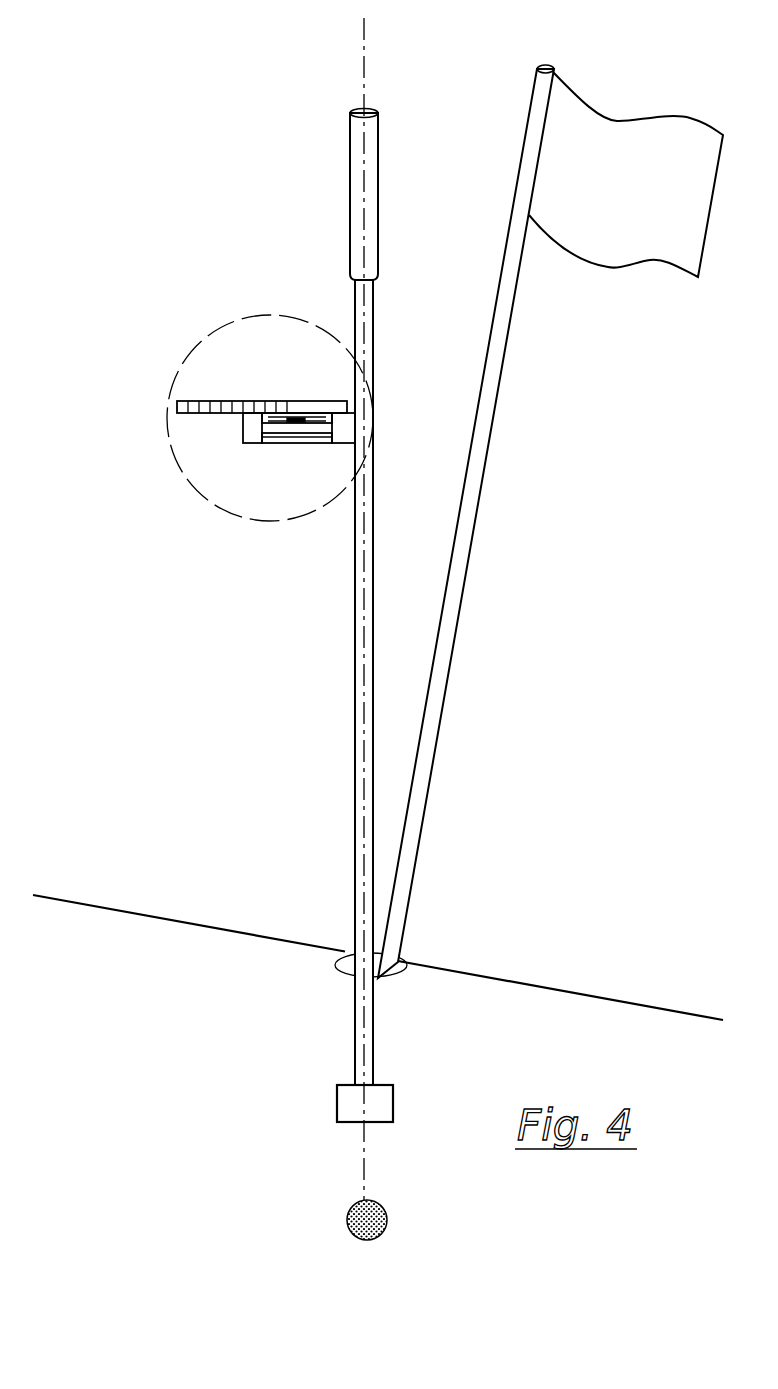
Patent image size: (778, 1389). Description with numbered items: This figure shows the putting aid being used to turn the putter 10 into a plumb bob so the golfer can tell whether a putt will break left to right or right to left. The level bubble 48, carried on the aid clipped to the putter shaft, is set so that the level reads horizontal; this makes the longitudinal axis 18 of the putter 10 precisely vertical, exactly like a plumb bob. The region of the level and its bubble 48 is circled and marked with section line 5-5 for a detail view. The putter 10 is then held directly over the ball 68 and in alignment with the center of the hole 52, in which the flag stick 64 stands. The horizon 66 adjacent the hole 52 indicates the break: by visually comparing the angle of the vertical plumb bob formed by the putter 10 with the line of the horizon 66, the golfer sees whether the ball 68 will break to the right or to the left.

The putter 10 is at (340, 100).
The longitudinal axis 18 is at (363, 62).
The level bubble 48 is at (293, 418).
The section line 5-5 is at (195, 485).
The hole 52 is at (393, 980).
The flag stick 64 is at (475, 540).
The horizon 66 is at (232, 928).
The ball 68 is at (372, 1202).